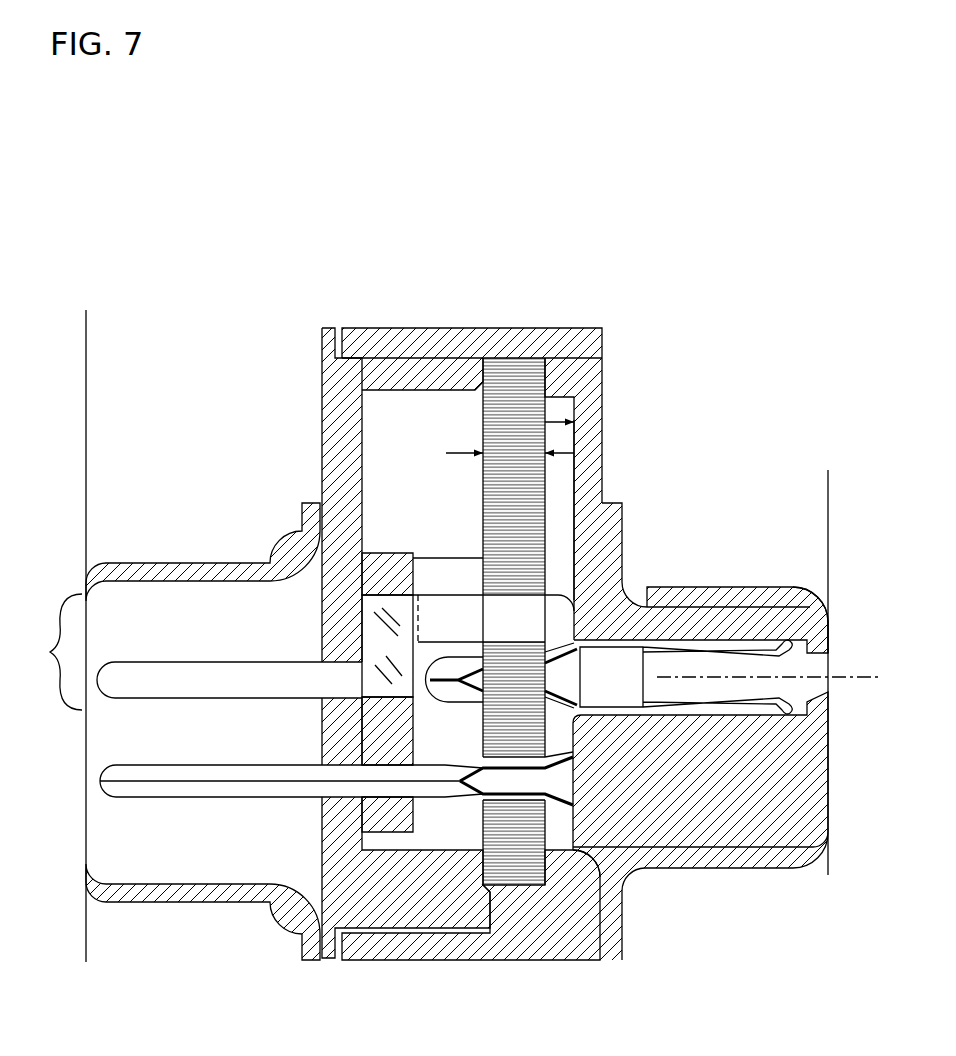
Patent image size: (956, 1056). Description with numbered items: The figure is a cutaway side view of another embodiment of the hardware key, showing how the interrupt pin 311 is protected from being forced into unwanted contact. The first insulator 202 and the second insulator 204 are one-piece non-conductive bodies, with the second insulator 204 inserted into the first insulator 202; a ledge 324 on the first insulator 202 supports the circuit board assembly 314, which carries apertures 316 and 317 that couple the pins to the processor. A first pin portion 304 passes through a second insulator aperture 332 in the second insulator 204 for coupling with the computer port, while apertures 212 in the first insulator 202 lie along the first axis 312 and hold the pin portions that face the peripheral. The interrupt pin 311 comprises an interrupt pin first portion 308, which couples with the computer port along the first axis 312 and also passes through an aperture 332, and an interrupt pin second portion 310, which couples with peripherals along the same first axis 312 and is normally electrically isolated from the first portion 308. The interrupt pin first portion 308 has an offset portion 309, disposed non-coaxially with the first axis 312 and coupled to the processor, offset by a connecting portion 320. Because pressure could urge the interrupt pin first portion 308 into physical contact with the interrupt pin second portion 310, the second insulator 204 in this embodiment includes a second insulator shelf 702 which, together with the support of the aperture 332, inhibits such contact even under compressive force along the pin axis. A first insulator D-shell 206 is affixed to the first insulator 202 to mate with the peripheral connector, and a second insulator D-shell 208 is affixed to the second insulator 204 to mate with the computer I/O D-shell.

The first insulator 202 is at (527, 962).
The second insulator 204 is at (318, 866).
The first insulator D-shell 206 is at (753, 868).
The second insulator D-shell 208 is at (163, 904).
The apertures 212 is at (779, 640).
The first pin portion 304 is at (382, 762).
The interrupt pin first portion 308 is at (140, 660).
The offset portion 309 is at (453, 610).
The interrupt pin second portion 310 is at (750, 653).
The interrupt pin 311 is at (49, 652).
The first axis 312 is at (786, 677).
The circuit board assembly 314 is at (483, 395).
The apertures 316 is at (600, 850).
The apertures 317 is at (560, 565).
The connecting portion 320 is at (385, 608).
The ledge 324 is at (698, 953).
The second insulator apertures 332 is at (330, 805).
The second insulator shelf 702 is at (395, 552).